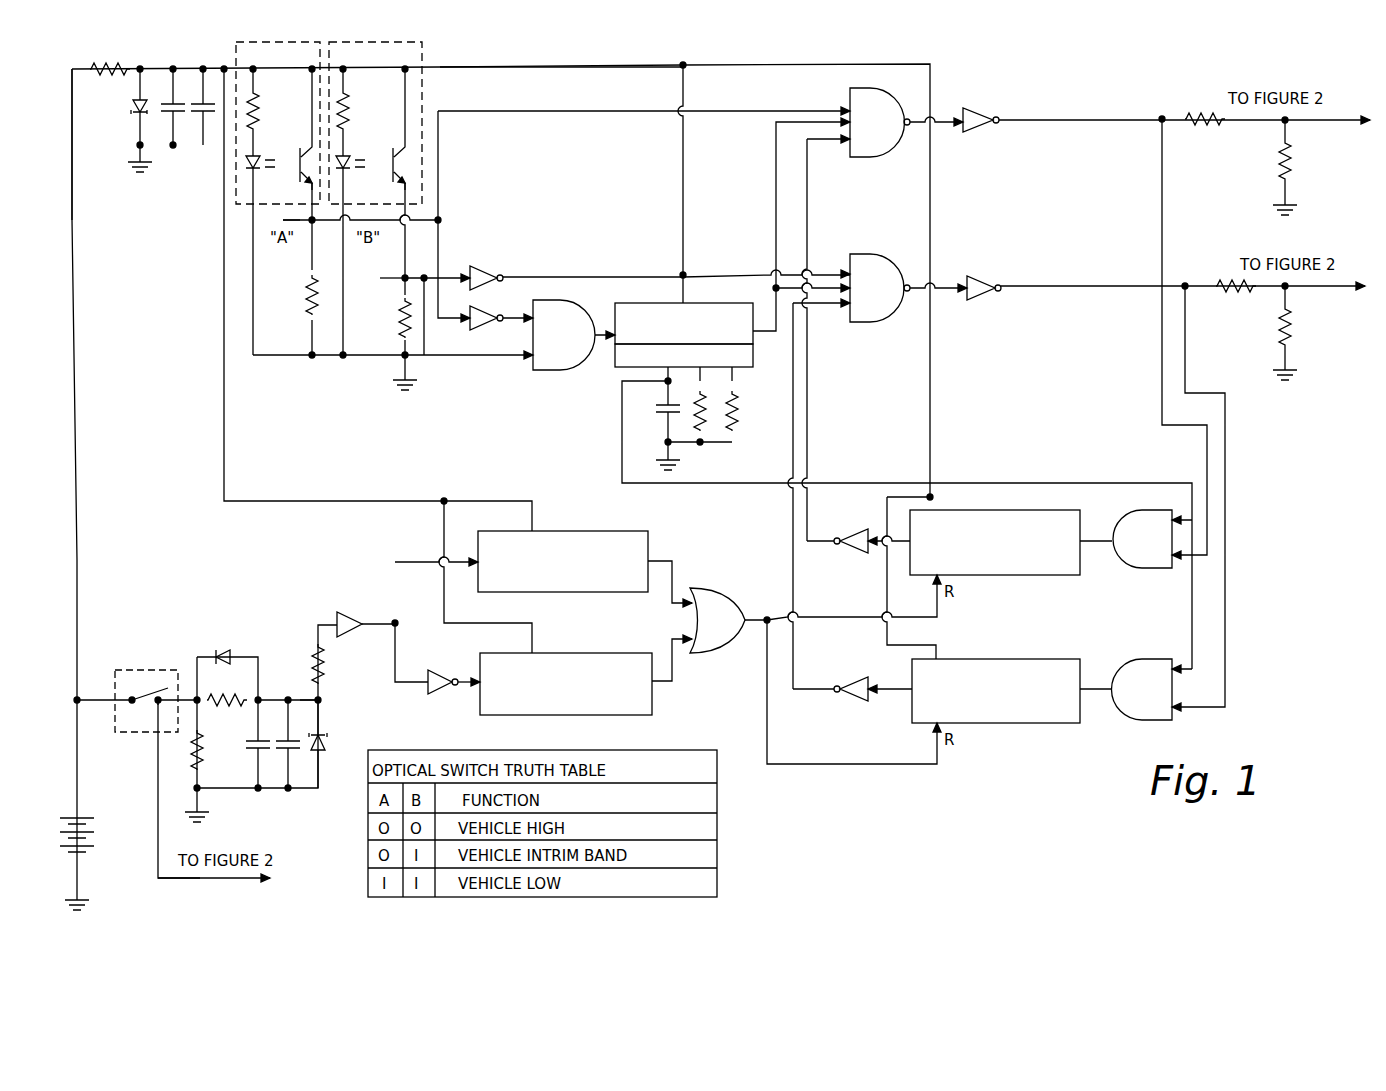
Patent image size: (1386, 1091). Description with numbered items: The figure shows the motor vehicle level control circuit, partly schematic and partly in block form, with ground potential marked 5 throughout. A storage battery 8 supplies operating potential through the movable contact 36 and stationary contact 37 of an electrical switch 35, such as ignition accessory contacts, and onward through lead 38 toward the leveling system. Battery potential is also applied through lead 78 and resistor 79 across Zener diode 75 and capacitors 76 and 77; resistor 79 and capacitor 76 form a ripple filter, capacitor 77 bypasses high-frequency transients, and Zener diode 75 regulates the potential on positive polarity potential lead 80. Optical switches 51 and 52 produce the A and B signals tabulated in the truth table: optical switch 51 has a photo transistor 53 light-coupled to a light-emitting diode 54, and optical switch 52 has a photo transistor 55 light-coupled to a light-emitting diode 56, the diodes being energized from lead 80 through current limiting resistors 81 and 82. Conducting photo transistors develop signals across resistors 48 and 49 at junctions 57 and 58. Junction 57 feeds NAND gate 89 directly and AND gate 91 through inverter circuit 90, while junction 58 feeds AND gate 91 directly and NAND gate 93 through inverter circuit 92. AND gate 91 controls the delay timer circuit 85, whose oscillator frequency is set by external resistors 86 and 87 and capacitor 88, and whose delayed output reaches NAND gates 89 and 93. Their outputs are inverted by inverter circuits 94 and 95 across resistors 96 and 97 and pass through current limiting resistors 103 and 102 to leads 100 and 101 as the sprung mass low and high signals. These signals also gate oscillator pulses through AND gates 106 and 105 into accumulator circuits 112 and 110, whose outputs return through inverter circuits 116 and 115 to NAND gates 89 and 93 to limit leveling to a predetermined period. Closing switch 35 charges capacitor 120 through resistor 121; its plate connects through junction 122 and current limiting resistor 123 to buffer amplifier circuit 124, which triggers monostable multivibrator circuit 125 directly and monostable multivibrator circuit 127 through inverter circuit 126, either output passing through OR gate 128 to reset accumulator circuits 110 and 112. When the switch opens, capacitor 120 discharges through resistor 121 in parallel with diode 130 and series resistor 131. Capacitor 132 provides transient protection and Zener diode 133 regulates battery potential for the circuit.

The point of reference or ground potential 5 is at (136, 172).
The storage battery 8 is at (90, 815).
The electrical switch 35 is at (146, 670).
The movable contact 36 is at (156, 690).
The stationary contact 37 is at (158, 705).
The lead 38 is at (198, 878).
The resistor 48 is at (306, 292).
The resistor 49 is at (399, 320).
The optical switch 51 is at (298, 42).
The optical switch 52 is at (392, 42).
The photo transistor 53 is at (300, 152).
The light-emitting diode 54 is at (246, 166).
The photo transistor 55 is at (398, 172).
The light-emitting diode 56 is at (394, 152).
The junction 57 is at (276, 218).
The junction 58 is at (402, 276).
The Zener diode 75 is at (133, 108).
The capacitor 76 is at (171, 102).
The capacitor 77 is at (202, 102).
The lead 78 is at (76, 498).
The resistor 79 is at (122, 66).
The positive polarity potential lead 80 is at (515, 66).
The current limiting resistor 81 is at (259, 118).
The current limiting resistor 82 is at (349, 118).
The delay timer circuit 85 is at (636, 320).
The external resistor 86 is at (737, 408).
The external resistor 87 is at (704, 428).
The capacitor 88 is at (664, 418).
The NAND gate 89 is at (866, 157).
The inverter circuit 90 is at (488, 318).
The AND gate 91 is at (562, 370).
The inverter circuit 92 is at (484, 274).
The NAND gate 93 is at (866, 254).
The inverter circuit 94 is at (980, 116).
The inverter circuit 95 is at (982, 284).
The resistor 96 is at (1280, 168).
The resistor 97 is at (1280, 330).
The lead 100 is at (1310, 122).
The lead 101 is at (1310, 289).
The current limiting resistor 102 is at (1222, 280).
The current limiting resistor 103 is at (1205, 110).
The AND gate 105 is at (1148, 668).
The AND gate 106 is at (1152, 512).
The accumulator circuit 110 is at (1024, 668).
The accumulator circuit 112 is at (1010, 518).
The inverter circuit 115 is at (852, 680).
The inverter circuit 116 is at (858, 530).
The capacitor 120 is at (254, 752).
The resistor 121 is at (238, 692).
The junction 122 is at (320, 700).
The current limiting resistor 123 is at (324, 660).
The buffer amplifier circuit 124 is at (350, 614).
The monostable multivibrator circuit 125 is at (620, 532).
The inverter circuit 126 is at (440, 672).
The monostable multivibrator circuit 127 is at (582, 654).
The OR gate 128 is at (728, 600).
The diode 130 is at (226, 650).
The series resistor 131 is at (203, 744).
The capacitor 132 is at (292, 752).
The Zener diode 133 is at (326, 742).